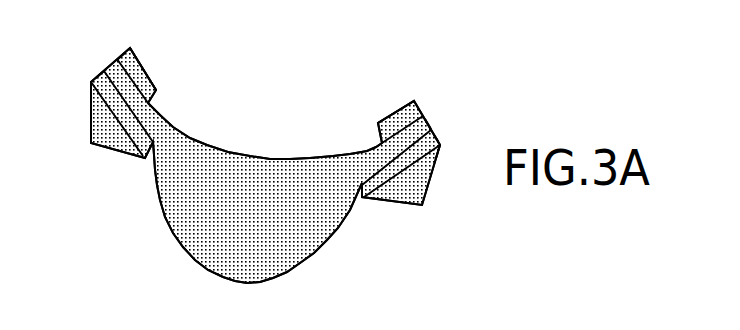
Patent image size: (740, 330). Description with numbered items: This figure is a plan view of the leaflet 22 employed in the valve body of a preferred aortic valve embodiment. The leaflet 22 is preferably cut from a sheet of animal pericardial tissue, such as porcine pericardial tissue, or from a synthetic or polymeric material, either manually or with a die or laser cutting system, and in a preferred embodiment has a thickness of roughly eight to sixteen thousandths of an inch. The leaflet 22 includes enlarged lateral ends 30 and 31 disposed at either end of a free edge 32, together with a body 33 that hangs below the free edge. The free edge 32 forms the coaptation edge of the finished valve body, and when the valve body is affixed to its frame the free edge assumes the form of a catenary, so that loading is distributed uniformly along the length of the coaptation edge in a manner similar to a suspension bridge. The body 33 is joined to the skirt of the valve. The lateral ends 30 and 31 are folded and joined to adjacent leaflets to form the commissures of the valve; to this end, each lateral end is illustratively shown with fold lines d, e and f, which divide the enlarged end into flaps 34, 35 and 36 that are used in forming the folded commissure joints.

The leaflet 22 is at (300, 78).
The enlarged lateral end 30 is at (98, 170).
The enlarged lateral end 31 is at (452, 184).
The free edge 32 is at (249, 151).
The body 33 is at (292, 237).
The flap 34 is at (138, 70).
The flap 35 is at (98, 78).
The flap 36 is at (97, 127).
The fold line d is at (121, 57).
The fold line e is at (100, 74).
The fold line f is at (91, 82).